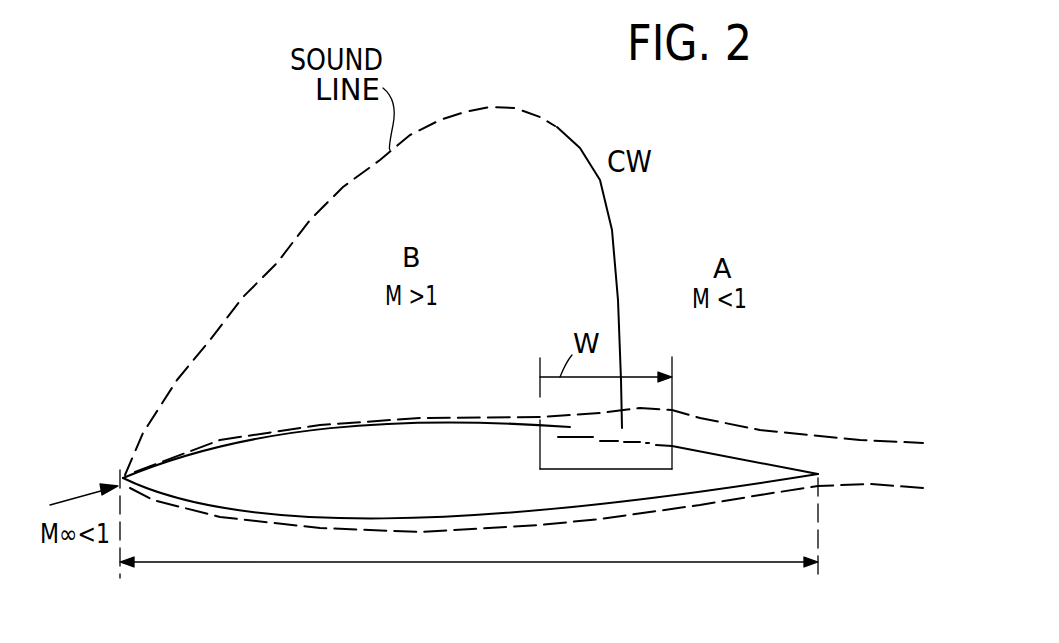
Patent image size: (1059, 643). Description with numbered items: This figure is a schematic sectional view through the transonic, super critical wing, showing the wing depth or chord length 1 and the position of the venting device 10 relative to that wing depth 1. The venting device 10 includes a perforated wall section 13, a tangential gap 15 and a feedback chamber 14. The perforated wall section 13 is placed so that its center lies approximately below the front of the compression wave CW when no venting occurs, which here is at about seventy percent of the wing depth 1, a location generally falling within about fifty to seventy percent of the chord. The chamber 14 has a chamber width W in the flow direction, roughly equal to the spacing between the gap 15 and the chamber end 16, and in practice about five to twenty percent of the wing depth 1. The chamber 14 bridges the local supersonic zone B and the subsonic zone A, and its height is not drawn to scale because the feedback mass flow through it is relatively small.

The wing depth 1 is at (522, 562).
The venting device 10 is at (702, 407).
The perforated wall section 13 is at (645, 440).
The chamber 14 is at (602, 448).
The tangential gap 15 is at (559, 437).
The chamber end 16 is at (672, 455).